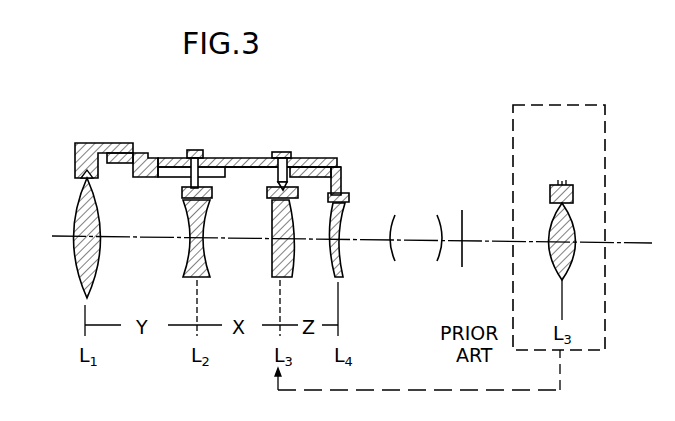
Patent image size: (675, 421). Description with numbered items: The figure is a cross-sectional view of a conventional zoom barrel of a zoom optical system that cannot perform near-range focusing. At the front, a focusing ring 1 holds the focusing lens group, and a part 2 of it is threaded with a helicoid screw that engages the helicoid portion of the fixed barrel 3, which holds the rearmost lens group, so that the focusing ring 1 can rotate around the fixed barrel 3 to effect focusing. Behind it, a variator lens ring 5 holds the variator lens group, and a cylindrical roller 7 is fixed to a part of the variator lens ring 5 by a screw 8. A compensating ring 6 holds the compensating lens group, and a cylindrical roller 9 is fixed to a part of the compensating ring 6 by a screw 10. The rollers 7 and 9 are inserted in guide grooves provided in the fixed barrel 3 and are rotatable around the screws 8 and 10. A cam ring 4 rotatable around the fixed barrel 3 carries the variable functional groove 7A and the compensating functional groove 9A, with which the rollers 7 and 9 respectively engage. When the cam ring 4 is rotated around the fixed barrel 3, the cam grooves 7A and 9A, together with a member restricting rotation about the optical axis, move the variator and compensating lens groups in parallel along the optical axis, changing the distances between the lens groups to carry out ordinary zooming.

The focusing ring 1 is at (75, 151).
The helicoid-threaded part of the focusing ring 2 is at (122, 152).
The fixed barrel 3 is at (151, 178).
The cam ring 4 is at (245, 158).
The variator lens ring 5 is at (212, 193).
The compensating ring 6 is at (297, 193).
The cylindrical roller 7 is at (207, 161).
The variable functional groove 7A is at (187, 156).
The screw 8 is at (197, 150).
The cylindrical roller 9 is at (302, 160).
The compensating functional groove 9A is at (273, 158).
The screw 10 is at (290, 156).